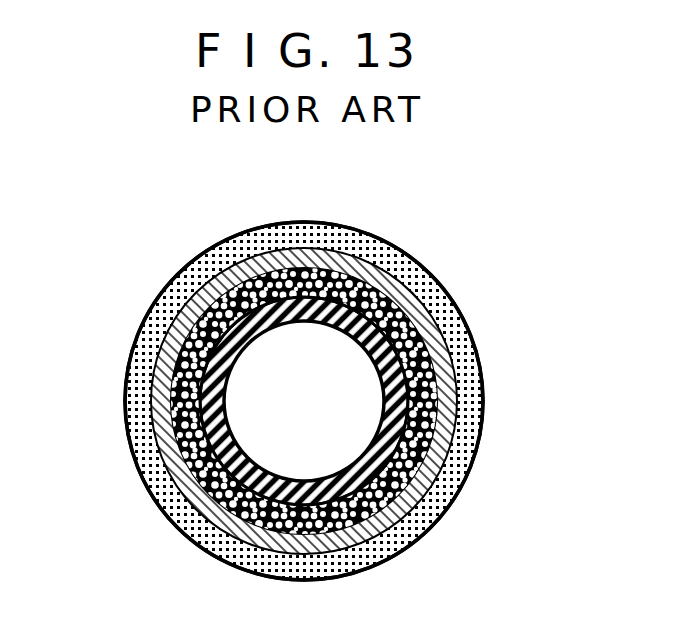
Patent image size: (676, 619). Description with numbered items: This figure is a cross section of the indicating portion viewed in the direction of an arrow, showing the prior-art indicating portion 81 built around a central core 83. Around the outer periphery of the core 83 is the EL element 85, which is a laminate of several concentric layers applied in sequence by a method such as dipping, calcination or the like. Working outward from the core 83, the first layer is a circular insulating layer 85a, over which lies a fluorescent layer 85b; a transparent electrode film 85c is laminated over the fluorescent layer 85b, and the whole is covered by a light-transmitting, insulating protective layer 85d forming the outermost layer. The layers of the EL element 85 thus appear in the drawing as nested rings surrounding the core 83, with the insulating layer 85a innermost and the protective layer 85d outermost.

The prior art cable 81 is at (143, 290).
The core 83 is at (335, 453).
The EL element 85 is at (457, 311).
The circular insulating layer 85a is at (440, 372).
The fluorescent layer 85b is at (455, 413).
The transparent electrode film 85c is at (445, 436).
The light-transmitting, insulating protective layer 85d is at (457, 489).